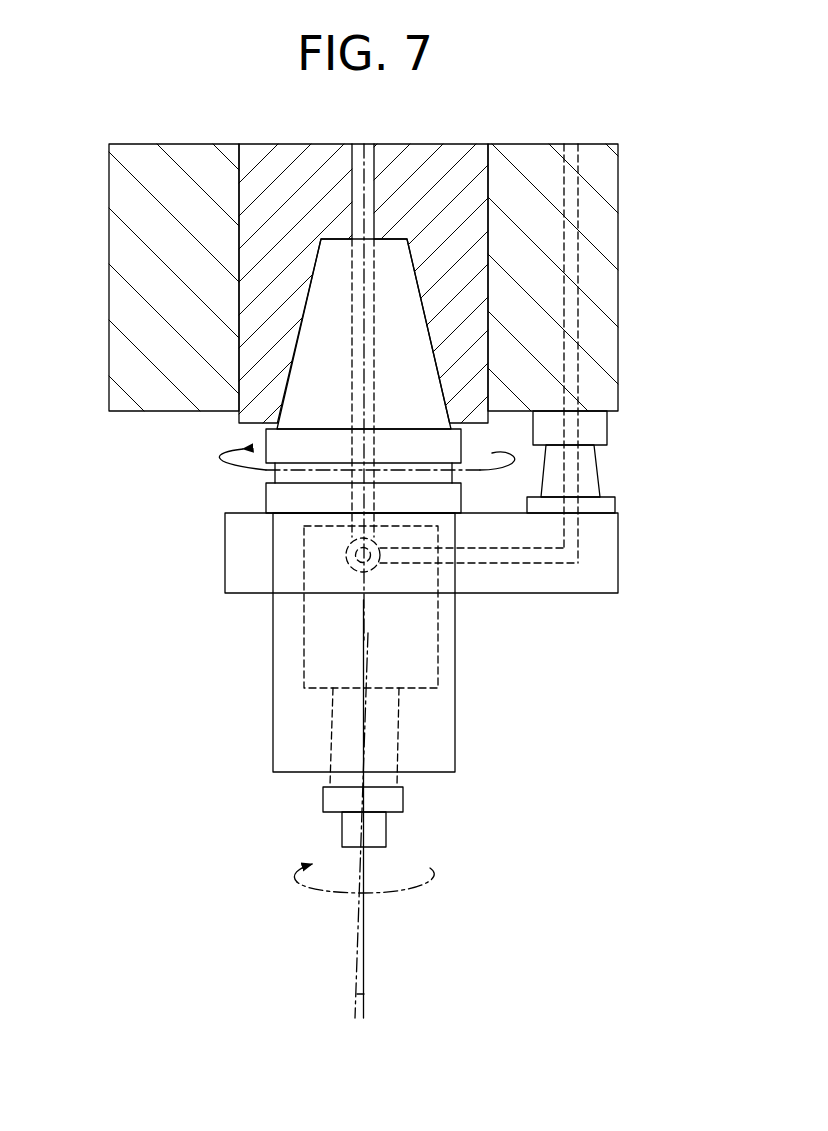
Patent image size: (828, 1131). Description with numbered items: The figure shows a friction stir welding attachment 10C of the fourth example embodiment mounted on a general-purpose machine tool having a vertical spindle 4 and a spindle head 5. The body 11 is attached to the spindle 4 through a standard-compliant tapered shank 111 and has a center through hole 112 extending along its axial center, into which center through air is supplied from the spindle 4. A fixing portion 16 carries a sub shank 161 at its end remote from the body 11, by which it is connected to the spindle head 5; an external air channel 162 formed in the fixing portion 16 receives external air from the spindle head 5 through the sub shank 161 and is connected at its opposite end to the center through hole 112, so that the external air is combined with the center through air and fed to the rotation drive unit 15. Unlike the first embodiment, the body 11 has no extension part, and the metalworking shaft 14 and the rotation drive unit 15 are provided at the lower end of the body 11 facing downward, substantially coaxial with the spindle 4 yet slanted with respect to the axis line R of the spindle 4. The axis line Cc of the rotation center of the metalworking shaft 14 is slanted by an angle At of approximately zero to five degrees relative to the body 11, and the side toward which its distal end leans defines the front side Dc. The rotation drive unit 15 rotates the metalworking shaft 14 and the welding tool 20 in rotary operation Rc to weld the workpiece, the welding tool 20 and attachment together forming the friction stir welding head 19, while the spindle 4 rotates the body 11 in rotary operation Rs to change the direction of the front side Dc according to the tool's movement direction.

The spindle 4 is at (472, 242).
The spindle head 5 is at (599, 346).
The body 11 is at (285, 635).
The metalworking shaft 14 is at (385, 740).
The rotation drive unit 15 is at (410, 635).
The fixing portion 16 is at (604, 552).
The friction stir welding head 19 is at (133, 742).
The welding tool 20 is at (318, 798).
The friction stir welding attachment 10C is at (270, 714).
The tapered shank 111 is at (300, 333).
The center through hole 112 is at (350, 541).
The sub shank 161 is at (589, 469).
The external air channel 162 is at (538, 559).
The axis line of the spindle R is at (364, 176).
The rotary operation Rs is at (369, 448).
The rotary operation Rc is at (380, 882).
The angle At is at (345, 809).
The axis line of the rotation center Cc is at (348, 845).
The front side Dc is at (338, 1009).